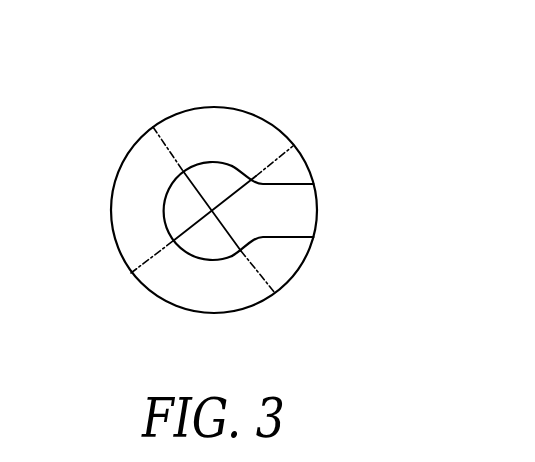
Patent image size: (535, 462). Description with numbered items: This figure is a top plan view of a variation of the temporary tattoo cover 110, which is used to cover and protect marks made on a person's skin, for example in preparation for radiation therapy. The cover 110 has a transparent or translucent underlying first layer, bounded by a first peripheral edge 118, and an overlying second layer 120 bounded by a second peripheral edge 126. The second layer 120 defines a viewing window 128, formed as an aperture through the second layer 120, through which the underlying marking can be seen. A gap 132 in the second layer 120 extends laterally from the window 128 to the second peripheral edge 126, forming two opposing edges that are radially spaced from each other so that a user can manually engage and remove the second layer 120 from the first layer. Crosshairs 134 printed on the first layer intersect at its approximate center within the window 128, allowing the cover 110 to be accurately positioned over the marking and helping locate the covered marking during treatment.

The temporary tattoo cover 110 is at (309, 77).
The first peripheral edge 118 is at (214, 180).
The second peripheral edge 126 is at (215, 107).
The second layer 120 is at (275, 140).
The viewing window 128 is at (180, 221).
The gap 132 is at (305, 213).
The crosshairs 134 is at (174, 238).